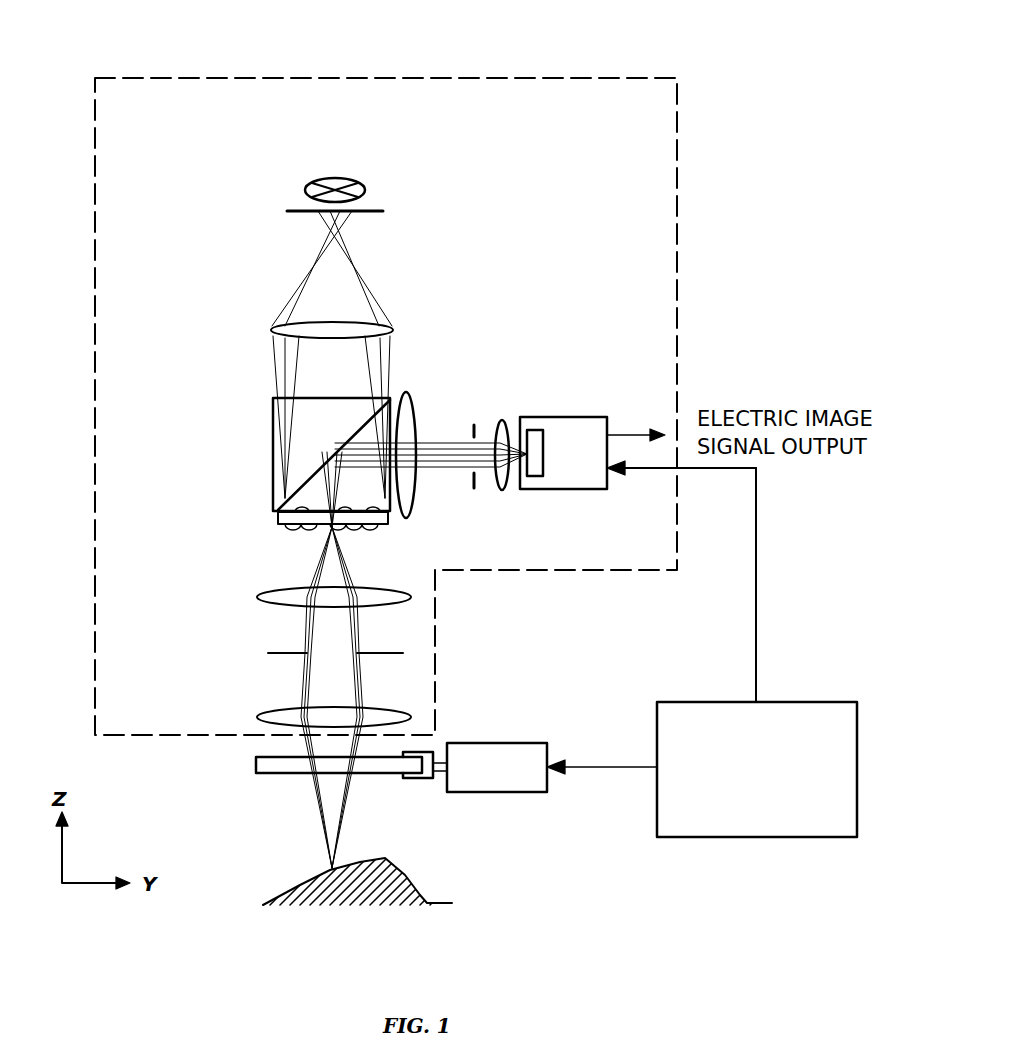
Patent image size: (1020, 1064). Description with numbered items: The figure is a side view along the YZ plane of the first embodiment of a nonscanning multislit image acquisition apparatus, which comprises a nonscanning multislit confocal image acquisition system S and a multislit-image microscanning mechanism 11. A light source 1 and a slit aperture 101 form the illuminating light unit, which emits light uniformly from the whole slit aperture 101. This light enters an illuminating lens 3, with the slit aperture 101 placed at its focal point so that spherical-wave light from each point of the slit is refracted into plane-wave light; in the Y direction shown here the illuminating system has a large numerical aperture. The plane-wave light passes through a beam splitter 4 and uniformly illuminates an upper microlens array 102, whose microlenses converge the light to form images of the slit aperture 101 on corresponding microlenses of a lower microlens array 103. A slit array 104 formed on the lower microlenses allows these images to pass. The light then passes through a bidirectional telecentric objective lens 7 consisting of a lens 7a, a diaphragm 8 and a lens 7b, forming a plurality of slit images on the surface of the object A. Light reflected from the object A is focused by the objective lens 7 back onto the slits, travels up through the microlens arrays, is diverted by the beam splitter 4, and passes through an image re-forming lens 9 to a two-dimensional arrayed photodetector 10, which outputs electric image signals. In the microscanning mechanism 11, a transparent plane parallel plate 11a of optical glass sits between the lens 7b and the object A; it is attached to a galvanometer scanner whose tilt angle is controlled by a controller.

The nonscanning multislit confocal image acquisition system S is at (532, 78).
The light source 1 is at (352, 178).
The slit aperture 101 is at (365, 210).
The illuminating lens 3 is at (352, 330).
The beam splitter 4 is at (273, 430).
The upper microlens array 102 is at (277, 510).
The lower microlens array 103 is at (314, 532).
The slit array 104 is at (300, 525).
The image re-forming lens 9 is at (402, 383).
The two-dimensional arrayed photodetector 10 is at (553, 432).
The objective lens 7 is at (277, 663).
The lens 7a is at (260, 597).
The diaphragm 8 is at (268, 653).
The lens 7b is at (302, 715).
The multislit-image microscanning mechanism 11 is at (556, 713).
The plane parallel plate 11a is at (410, 753).
The object A is at (400, 884).